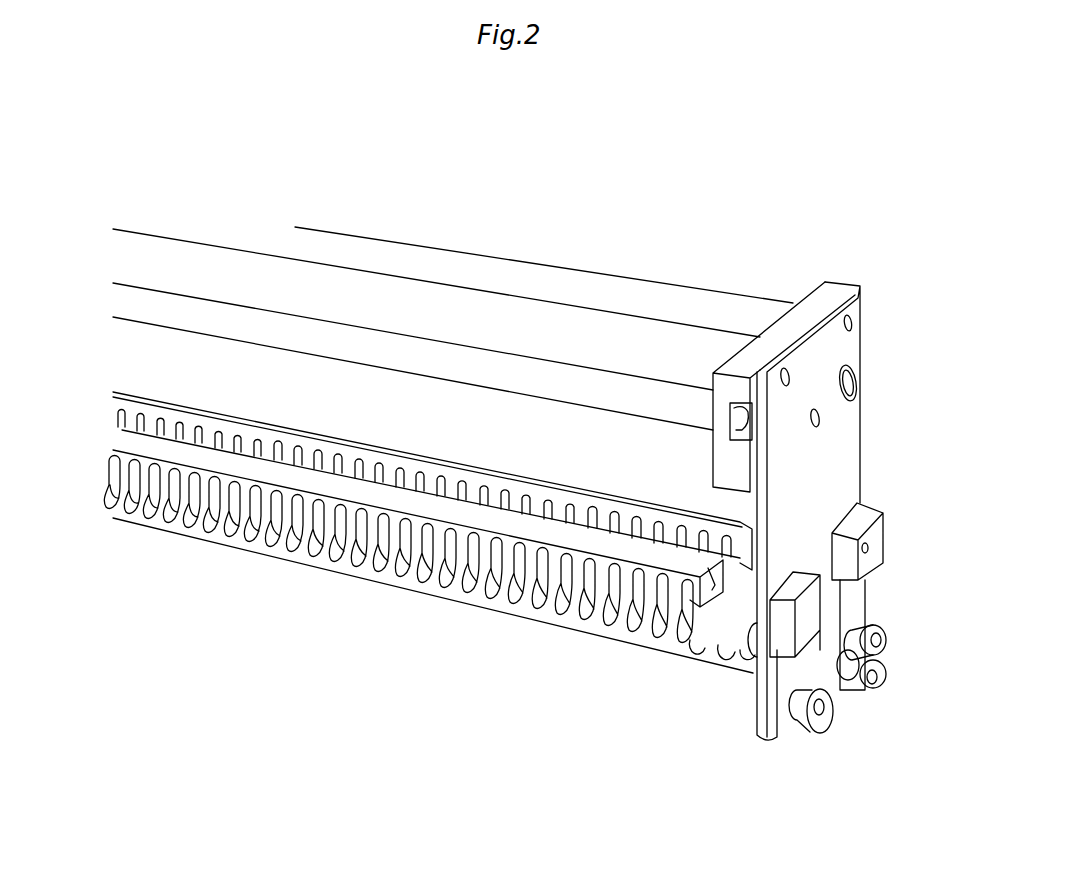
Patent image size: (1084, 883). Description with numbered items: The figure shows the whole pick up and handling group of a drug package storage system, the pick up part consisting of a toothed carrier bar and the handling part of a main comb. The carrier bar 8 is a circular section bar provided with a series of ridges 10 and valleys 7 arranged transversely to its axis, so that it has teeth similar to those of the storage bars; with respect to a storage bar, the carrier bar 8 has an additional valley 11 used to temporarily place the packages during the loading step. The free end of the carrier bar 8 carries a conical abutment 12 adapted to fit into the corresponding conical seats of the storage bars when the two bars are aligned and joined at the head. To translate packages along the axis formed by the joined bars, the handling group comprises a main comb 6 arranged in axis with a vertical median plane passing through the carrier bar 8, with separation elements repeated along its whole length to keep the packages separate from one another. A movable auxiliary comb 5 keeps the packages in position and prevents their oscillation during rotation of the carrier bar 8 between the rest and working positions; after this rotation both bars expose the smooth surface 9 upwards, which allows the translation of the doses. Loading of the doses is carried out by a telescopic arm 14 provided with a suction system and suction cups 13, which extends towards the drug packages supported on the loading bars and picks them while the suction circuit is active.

The auxiliary comb 5 is at (165, 412).
The main comb 6 is at (137, 435).
The valleys 7 is at (377, 567).
The carrier bar 8 is at (452, 589).
The smooth surface 9 is at (583, 632).
The ridges 10 is at (700, 633).
The additional valley 11 is at (845, 665).
The conical abutment 12 is at (883, 678).
The suction cups 13 is at (877, 635).
The telescopic arm 14 is at (553, 287).